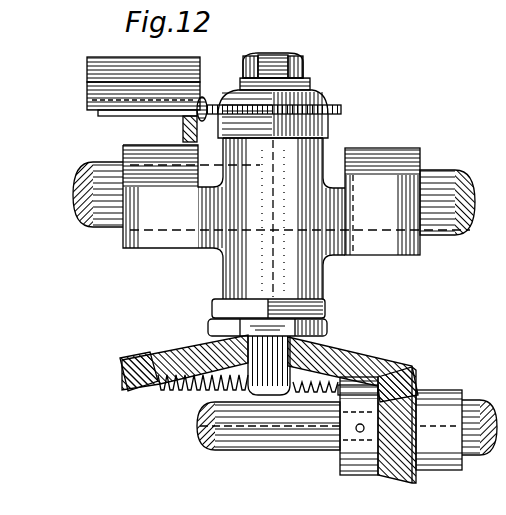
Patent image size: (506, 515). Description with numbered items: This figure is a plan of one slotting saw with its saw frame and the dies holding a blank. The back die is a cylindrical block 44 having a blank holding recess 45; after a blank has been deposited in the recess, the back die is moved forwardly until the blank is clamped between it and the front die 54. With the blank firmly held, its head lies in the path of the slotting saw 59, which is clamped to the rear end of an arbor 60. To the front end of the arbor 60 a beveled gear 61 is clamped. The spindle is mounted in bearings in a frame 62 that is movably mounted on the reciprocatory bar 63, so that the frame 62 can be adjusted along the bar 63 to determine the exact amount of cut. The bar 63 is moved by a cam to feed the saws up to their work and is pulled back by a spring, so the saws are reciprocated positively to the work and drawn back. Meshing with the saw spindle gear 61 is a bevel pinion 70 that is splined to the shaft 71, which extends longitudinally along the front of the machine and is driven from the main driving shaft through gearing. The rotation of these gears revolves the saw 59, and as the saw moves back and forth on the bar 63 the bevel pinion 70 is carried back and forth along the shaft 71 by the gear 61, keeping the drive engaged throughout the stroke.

The cylindrical block 44 is at (87, 72).
The blank holding recess 45 is at (87, 95).
The front die 54 is at (183, 128).
The slotting saw 59 is at (341, 112).
The arbor 60 is at (330, 340).
The beveled gear 61 is at (149, 363).
The frame 62 is at (386, 240).
The reciprocatory bar 63 is at (458, 182).
The bevel pinion 70 is at (398, 476).
The shaft 71 is at (295, 450).